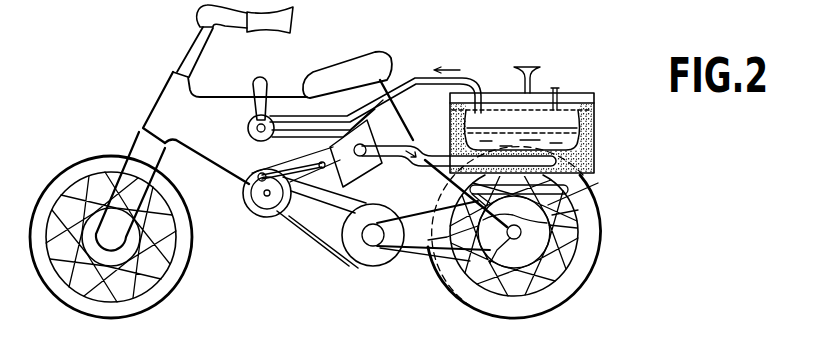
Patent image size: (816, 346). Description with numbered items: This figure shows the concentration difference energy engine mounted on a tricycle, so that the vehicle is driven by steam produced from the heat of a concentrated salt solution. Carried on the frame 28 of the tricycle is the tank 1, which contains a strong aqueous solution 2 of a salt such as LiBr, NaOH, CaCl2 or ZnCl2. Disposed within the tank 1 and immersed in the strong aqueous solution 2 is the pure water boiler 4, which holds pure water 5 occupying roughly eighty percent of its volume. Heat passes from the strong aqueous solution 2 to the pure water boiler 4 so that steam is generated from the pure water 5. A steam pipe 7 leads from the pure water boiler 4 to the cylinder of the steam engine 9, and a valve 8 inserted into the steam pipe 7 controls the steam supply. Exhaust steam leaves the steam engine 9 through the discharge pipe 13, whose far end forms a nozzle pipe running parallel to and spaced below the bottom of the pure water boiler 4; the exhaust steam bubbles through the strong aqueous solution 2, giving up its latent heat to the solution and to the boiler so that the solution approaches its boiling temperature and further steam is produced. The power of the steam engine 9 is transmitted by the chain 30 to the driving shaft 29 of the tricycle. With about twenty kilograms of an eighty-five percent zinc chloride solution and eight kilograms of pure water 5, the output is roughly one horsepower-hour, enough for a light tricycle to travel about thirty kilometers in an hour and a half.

The tank 1 is at (595, 147).
The strong aqueous solution 2 is at (595, 128).
The pure water boiler 4 is at (580, 158).
The pure water 5 is at (557, 127).
The steam pipe 7 is at (417, 78).
The valve 8 is at (268, 85).
The steam engine 9 is at (372, 133).
The discharge pipe 13 is at (428, 152).
The frame 28 is at (193, 127).
The driving shaft 29 is at (471, 302).
The chain 30 is at (308, 238).